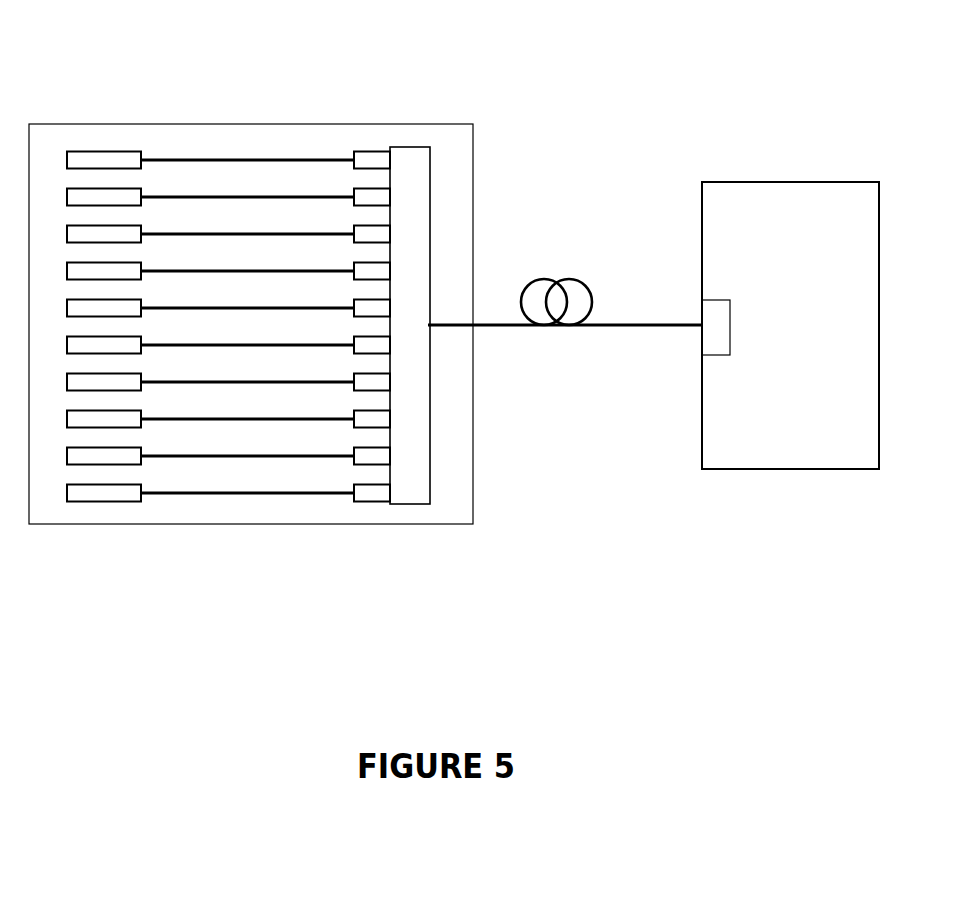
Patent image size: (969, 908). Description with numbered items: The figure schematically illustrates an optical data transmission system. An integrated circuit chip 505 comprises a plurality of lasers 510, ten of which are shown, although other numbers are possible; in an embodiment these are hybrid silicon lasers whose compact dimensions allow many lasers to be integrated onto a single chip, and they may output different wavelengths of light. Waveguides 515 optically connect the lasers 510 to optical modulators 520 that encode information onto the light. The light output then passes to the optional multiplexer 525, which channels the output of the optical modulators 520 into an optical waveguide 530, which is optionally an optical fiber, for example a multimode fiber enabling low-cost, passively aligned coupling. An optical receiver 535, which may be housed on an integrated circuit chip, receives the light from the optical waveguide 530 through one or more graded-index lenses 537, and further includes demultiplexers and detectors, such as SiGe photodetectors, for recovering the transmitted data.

The integrated circuit chip 505 is at (87, 122).
The lasers 510 is at (102, 502).
The waveguides 515 is at (205, 158).
The optical modulators 520 is at (367, 502).
The multiplexer 525 is at (409, 148).
The optical waveguide 530 is at (588, 280).
The optical receiver 535 is at (790, 325).
The graded-index lenses 537 is at (705, 341).